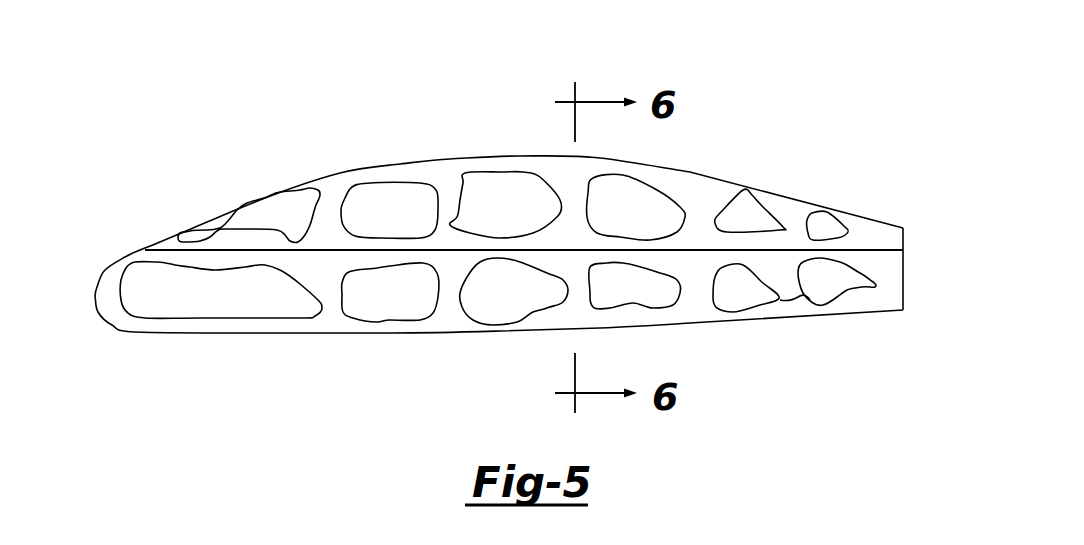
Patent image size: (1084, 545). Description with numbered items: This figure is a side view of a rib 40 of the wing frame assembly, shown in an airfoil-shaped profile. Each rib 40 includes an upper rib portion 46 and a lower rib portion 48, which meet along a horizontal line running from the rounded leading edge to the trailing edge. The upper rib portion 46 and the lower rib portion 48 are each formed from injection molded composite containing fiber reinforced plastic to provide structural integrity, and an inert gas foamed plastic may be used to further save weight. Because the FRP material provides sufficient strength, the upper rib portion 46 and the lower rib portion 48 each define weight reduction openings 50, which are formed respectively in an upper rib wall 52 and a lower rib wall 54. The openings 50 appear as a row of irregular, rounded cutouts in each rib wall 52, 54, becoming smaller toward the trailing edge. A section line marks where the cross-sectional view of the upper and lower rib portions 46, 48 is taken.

The rib 40 is at (201, 123).
The upper rib portion 46 is at (375, 170).
The lower rib portion 48 is at (347, 333).
The weight reduction openings 50 is at (516, 199).
The upper rib wall 52 is at (720, 192).
The lower rib wall 54 is at (798, 297).